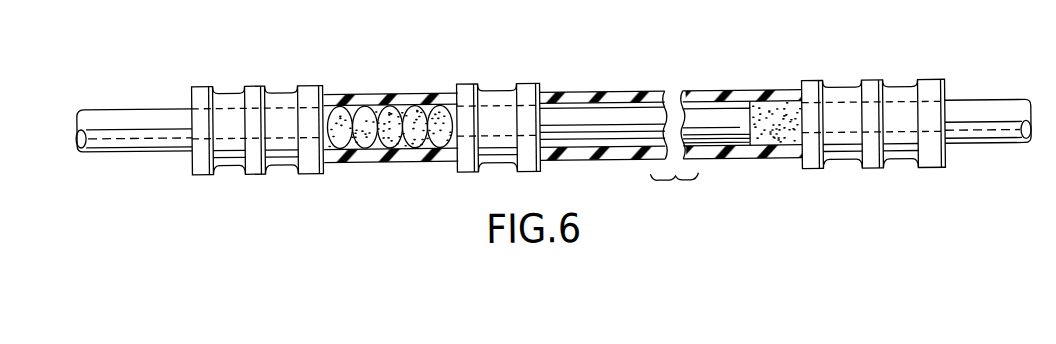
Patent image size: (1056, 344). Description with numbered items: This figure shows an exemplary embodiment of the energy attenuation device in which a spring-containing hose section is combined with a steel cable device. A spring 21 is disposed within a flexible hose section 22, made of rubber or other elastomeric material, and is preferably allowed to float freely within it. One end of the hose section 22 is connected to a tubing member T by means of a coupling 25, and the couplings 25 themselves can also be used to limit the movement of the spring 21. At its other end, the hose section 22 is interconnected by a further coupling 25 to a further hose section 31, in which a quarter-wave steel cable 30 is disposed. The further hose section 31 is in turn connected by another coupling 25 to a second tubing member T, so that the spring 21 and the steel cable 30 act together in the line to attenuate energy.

The tubing member T is at (140, 109).
The spring 21 is at (413, 110).
The hose section 22 is at (415, 158).
The coupling 25 is at (282, 95).
The steel cable 30 is at (630, 97).
The further hose section 31 is at (715, 160).